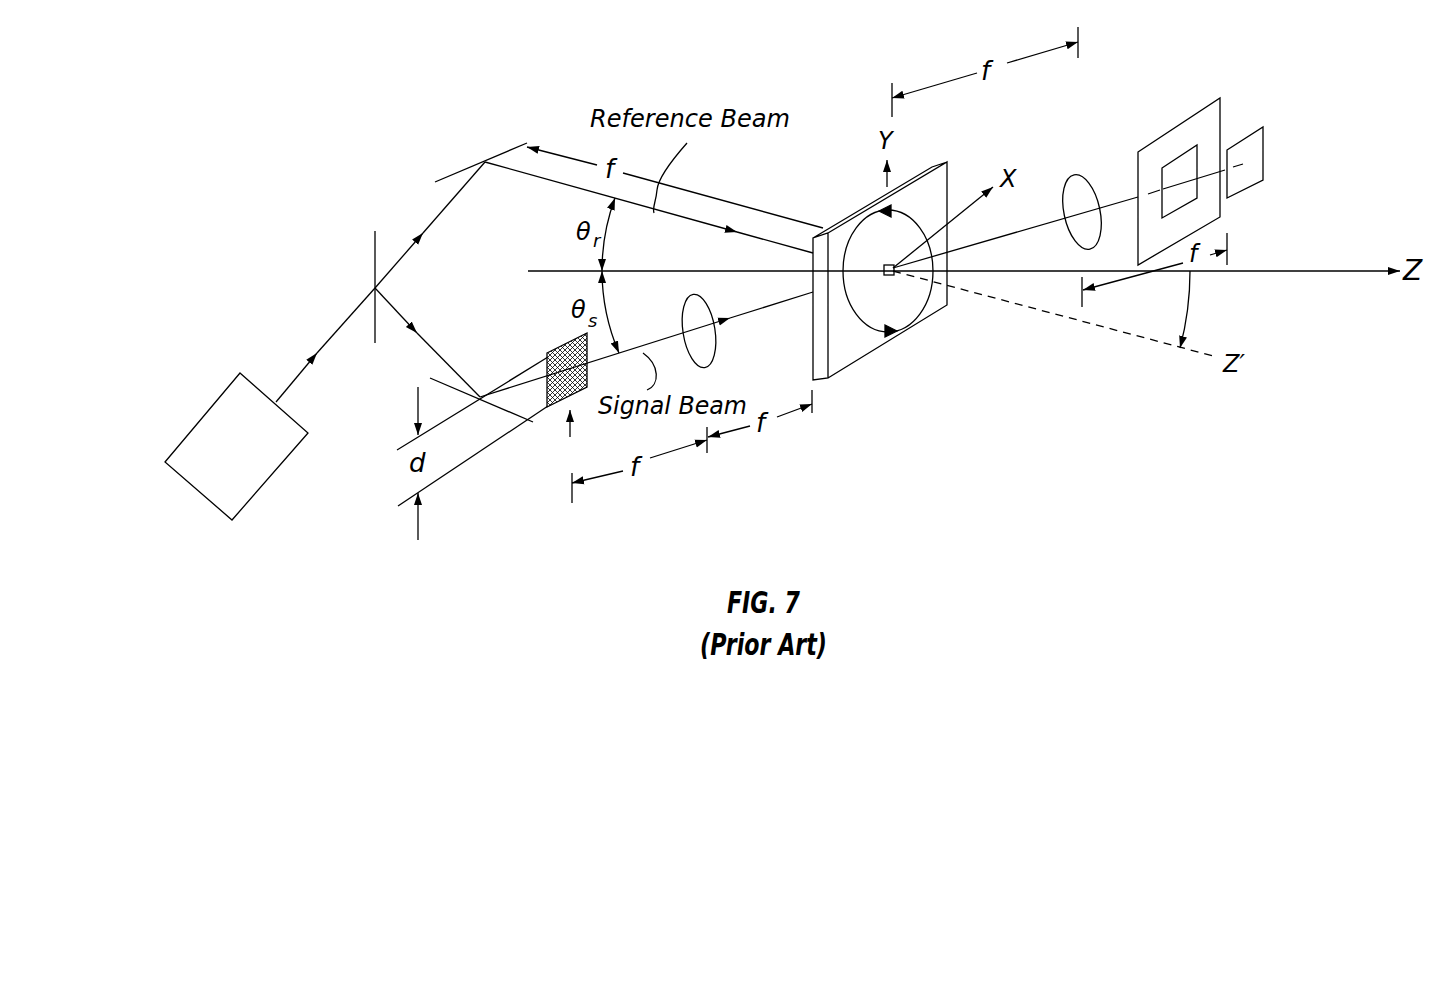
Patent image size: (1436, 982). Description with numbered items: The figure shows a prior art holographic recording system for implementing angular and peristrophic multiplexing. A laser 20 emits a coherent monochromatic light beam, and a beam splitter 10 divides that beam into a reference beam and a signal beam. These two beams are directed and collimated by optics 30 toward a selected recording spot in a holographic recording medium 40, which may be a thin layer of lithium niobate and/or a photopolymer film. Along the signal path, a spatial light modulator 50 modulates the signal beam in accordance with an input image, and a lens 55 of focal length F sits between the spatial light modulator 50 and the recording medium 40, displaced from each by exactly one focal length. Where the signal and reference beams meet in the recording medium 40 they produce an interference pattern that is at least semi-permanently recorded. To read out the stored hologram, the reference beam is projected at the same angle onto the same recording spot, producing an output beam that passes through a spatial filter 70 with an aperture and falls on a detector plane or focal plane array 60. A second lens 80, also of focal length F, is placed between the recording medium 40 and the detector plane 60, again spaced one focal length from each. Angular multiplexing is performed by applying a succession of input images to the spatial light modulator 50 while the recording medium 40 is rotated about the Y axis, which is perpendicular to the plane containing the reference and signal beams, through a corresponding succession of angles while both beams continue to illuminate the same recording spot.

The beam splitter 10 is at (375, 257).
The laser 20 is at (218, 395).
The optics 30 is at (495, 157).
The holographic recording medium 40 is at (842, 222).
The spatial light modulator 50 is at (571, 340).
The lens 55 is at (716, 344).
The detector plane 60 is at (1266, 154).
The spatial filter 70 is at (1165, 132).
The lens 80 is at (1073, 176).